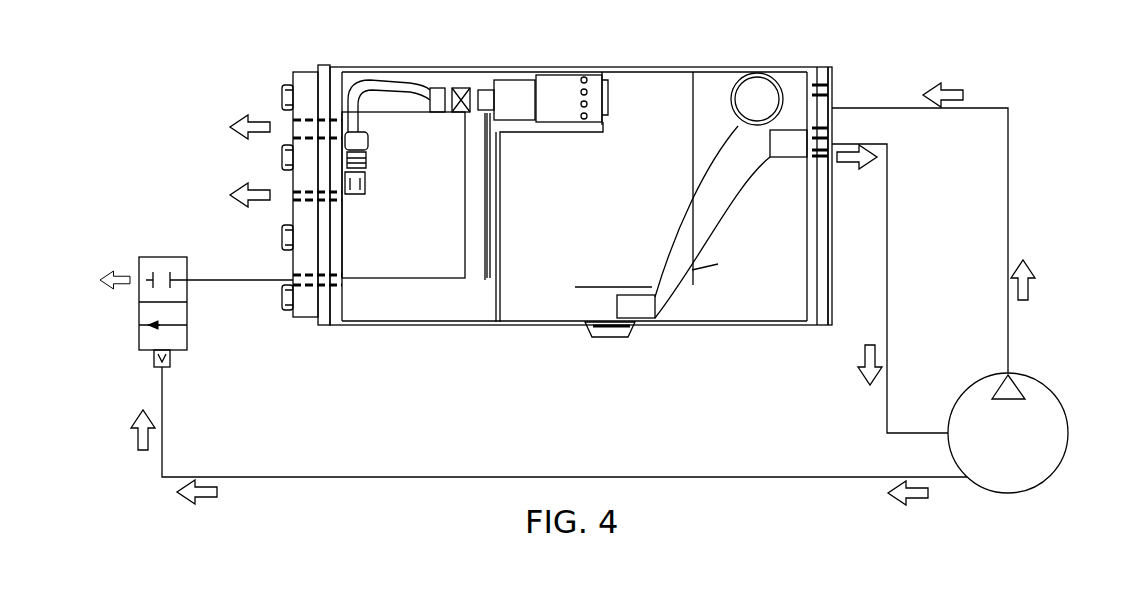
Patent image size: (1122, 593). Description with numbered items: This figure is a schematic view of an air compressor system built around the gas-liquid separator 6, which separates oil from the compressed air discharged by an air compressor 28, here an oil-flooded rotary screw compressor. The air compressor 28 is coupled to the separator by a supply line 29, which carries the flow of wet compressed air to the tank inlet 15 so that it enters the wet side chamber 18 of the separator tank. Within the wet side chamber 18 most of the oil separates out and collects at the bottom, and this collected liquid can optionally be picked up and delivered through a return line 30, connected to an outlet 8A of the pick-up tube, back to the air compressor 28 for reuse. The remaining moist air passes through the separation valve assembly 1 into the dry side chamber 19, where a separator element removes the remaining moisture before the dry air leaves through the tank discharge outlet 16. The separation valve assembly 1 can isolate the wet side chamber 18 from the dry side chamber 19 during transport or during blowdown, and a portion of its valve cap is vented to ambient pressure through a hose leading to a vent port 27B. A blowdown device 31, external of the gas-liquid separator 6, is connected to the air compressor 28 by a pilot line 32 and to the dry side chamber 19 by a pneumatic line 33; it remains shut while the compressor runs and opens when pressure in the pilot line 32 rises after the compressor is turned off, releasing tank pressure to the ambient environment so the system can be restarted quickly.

The separation valve assembly 1 is at (558, 78).
The gas-liquid separator 6 is at (308, 60).
The outlet 8A is at (812, 152).
The tank inlet 15 is at (832, 95).
The tank discharge outlet 16 is at (300, 128).
The wet side chamber 18 is at (596, 226).
The dry side chamber 19 is at (403, 209).
The vent port 27B is at (293, 200).
The air compressor 28 is at (1042, 385).
The supply line 29 is at (1008, 190).
The return line 30 is at (887, 270).
The blowdown device 31 is at (160, 255).
The pilot line 32 is at (665, 477).
The pneumatic line 33 is at (219, 280).